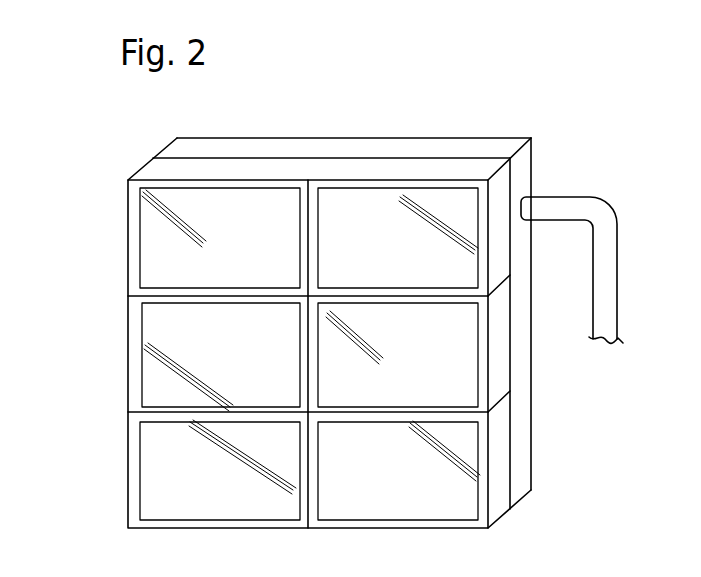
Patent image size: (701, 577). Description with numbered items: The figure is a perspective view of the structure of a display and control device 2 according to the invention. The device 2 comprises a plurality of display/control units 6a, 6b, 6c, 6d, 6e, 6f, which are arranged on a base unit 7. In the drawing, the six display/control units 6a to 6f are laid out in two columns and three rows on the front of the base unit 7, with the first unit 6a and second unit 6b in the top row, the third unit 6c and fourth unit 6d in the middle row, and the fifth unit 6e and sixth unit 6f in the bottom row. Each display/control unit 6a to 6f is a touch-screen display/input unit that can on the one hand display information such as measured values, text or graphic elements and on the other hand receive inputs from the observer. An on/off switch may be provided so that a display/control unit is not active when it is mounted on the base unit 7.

The display and control device 2 is at (127, 320).
The display/control unit 6a is at (244, 254).
The display/control unit 6b is at (414, 254).
The display/control unit 6c is at (241, 369).
The display/control unit 6d is at (420, 369).
The display/control unit 6e is at (237, 487).
The display/control unit 6f is at (410, 488).
The base unit 7 is at (519, 411).